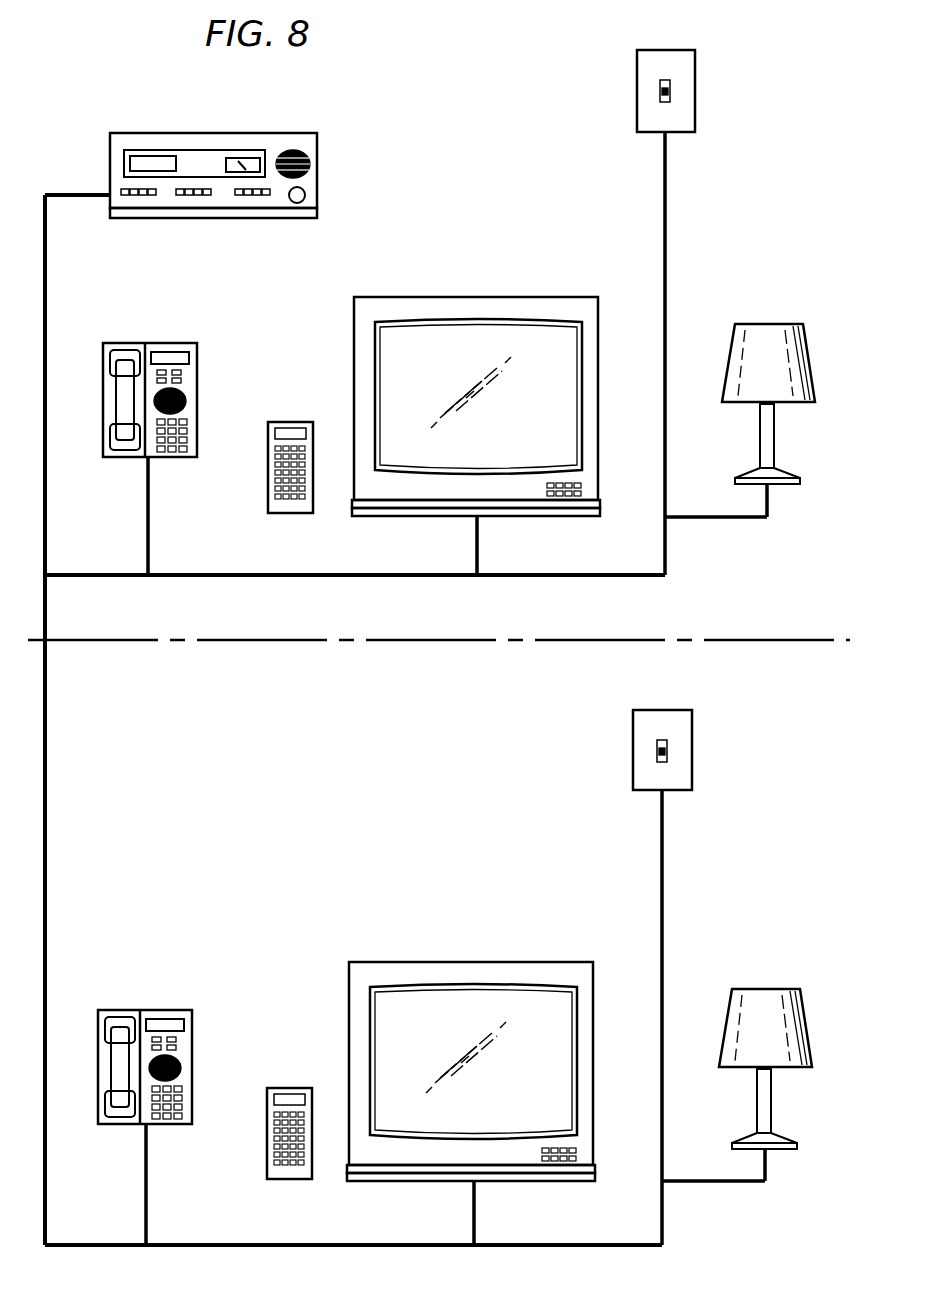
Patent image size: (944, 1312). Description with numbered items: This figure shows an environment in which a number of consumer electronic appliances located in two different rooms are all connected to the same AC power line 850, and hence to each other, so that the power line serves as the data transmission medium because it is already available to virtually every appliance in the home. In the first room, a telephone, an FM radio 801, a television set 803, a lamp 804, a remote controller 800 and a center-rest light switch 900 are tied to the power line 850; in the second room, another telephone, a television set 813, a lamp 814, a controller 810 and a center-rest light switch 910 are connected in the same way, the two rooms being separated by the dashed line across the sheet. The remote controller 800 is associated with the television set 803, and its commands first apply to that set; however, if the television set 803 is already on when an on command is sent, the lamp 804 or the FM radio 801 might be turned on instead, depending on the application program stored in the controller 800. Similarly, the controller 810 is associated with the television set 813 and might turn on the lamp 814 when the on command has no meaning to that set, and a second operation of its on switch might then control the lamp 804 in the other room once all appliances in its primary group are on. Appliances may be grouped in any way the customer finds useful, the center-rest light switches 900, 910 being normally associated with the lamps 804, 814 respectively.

The remote controller 800 is at (283, 514).
The FM radio 801 is at (226, 137).
The television set 803 is at (490, 297).
The lamp 804 is at (768, 324).
The controller 810 is at (282, 1180).
The television set 813 is at (485, 962).
The lamp 814 is at (766, 989).
The AC power line 850 is at (45, 707).
The center-rest light switch 900 is at (685, 72).
The center-rest light switch 910 is at (683, 733).